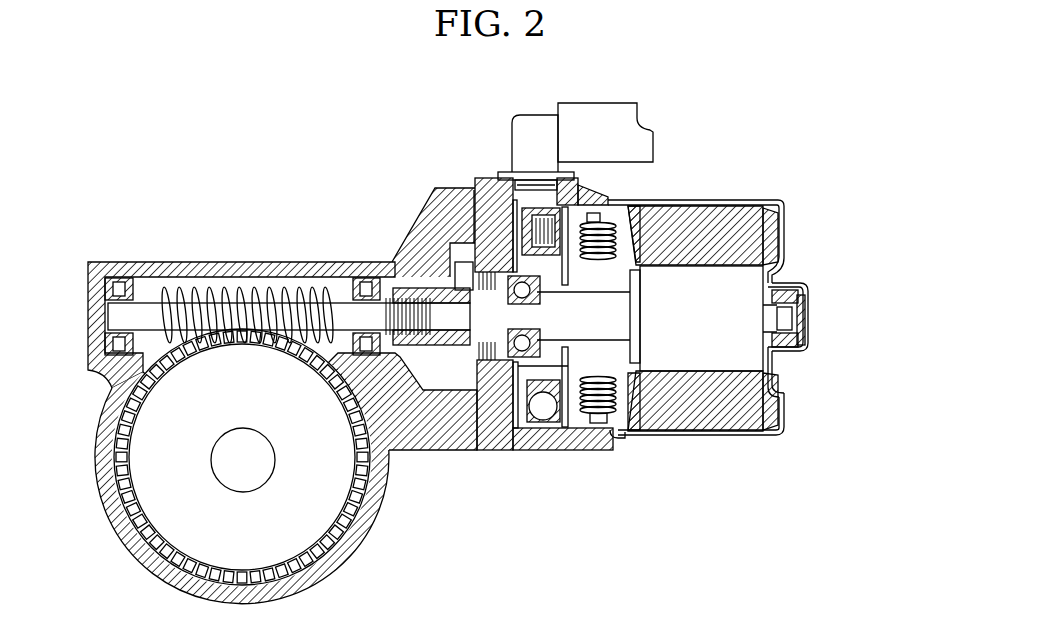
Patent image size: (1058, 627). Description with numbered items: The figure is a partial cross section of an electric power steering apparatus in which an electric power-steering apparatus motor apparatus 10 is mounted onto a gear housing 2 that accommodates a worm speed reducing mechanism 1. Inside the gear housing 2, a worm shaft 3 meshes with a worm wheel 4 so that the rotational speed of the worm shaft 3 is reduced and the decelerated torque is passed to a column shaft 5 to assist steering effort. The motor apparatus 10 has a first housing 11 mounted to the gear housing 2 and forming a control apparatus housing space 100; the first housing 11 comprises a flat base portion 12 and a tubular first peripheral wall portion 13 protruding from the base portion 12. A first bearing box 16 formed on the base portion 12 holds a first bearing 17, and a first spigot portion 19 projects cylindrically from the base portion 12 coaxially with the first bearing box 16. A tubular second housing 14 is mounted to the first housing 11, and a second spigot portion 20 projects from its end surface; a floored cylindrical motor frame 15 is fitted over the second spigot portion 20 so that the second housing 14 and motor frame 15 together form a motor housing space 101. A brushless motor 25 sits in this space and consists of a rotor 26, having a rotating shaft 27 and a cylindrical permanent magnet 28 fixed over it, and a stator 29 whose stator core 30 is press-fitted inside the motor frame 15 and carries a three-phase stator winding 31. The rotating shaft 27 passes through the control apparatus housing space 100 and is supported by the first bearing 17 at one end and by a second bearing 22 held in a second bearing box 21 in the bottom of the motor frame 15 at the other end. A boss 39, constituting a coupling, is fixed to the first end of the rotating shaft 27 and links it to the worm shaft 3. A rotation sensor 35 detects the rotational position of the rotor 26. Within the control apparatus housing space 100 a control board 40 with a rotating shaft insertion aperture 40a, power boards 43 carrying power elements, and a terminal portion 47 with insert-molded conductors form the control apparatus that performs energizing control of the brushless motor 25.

The worm speed reducing mechanism 1 is at (282, 277).
The gear housing 2 is at (198, 262).
The worm shaft 3 is at (237, 292).
The worm wheel 4 is at (310, 547).
The column shaft 5 is at (265, 462).
The electric power-steering apparatus motor apparatus 10 is at (487, 165).
The first housing 11 is at (472, 177).
The base portion 12 is at (492, 453).
The first peripheral wall portion 13 is at (532, 452).
The second housing 14 is at (597, 462).
The motor frame 15 is at (733, 437).
The first bearing box 16 is at (430, 192).
The first bearing 17 is at (473, 257).
The first spigot portion 19 is at (473, 223).
The second spigot portion 20 is at (628, 443).
The second bearing box 21 is at (792, 278).
The second bearing 22 is at (797, 297).
The brushless motor 25 is at (790, 262).
The rotor 26 is at (745, 345).
The rotating shaft 27 is at (693, 433).
The permanent magnet 28 is at (783, 386).
The stator 29 is at (705, 275).
The stator core 30 is at (725, 215).
The three-phase stator winding 31 is at (763, 294).
The rotation sensor 35 is at (452, 368).
The boss 39 is at (397, 287).
The control board 40 is at (577, 452).
The rotating shaft insertion aperture 40a is at (568, 290).
The power board 43 is at (525, 452).
The terminal portion 47 is at (553, 452).
The control apparatus housing space 100 is at (543, 357).
The motor housing space 101 is at (658, 433).